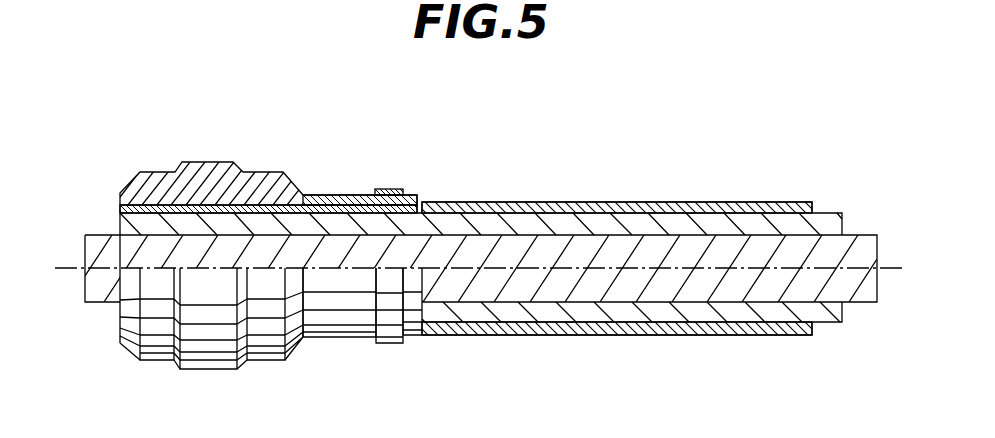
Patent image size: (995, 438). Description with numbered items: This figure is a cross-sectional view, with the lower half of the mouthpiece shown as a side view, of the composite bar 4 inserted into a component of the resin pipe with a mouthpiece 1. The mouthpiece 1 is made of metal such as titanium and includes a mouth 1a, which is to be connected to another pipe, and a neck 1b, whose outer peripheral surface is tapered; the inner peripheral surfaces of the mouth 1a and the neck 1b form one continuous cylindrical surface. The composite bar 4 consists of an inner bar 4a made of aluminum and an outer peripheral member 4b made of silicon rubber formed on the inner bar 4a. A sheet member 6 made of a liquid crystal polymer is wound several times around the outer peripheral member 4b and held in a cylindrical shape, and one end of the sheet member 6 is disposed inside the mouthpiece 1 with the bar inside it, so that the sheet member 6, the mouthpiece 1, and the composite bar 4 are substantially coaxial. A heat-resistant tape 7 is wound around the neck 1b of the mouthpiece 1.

The mouthpiece 1 is at (268, 242).
The mouth 1a is at (192, 180).
The neck 1b is at (342, 195).
The composite bar 4 is at (491, 224).
The inner bar 4a is at (863, 243).
The outer peripheral member 4b is at (484, 245).
The sheet member 6 is at (598, 210).
The heat-resistant tape 7 is at (392, 334).